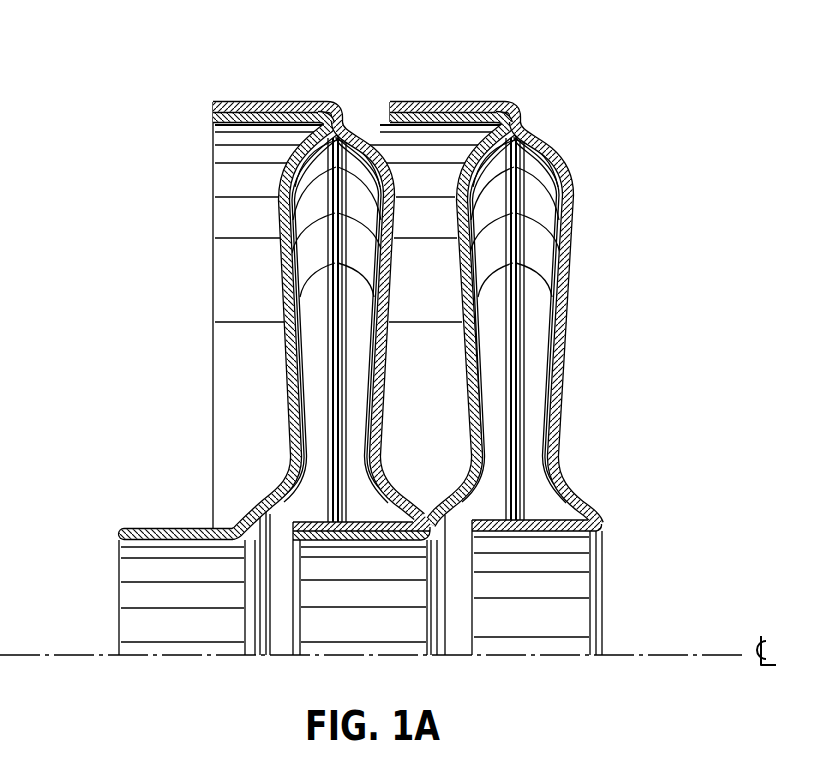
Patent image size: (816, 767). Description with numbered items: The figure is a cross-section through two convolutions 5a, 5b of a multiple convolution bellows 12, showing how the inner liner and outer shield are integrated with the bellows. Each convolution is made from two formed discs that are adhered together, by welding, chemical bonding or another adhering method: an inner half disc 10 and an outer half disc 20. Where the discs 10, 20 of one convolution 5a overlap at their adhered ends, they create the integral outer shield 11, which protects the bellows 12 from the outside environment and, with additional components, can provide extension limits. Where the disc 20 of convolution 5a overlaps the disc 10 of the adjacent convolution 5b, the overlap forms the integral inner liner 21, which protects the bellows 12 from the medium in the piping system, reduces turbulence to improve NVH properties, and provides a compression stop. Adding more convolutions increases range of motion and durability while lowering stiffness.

The convolution 5a is at (331, 84).
The convolution 5b is at (547, 101).
The inner half disc 10 is at (288, 344).
The integral outer shield 11 is at (258, 100).
The bellows 12 is at (108, 461).
The outer half disc 20 is at (363, 127).
The integral inner liner 21 is at (360, 541).